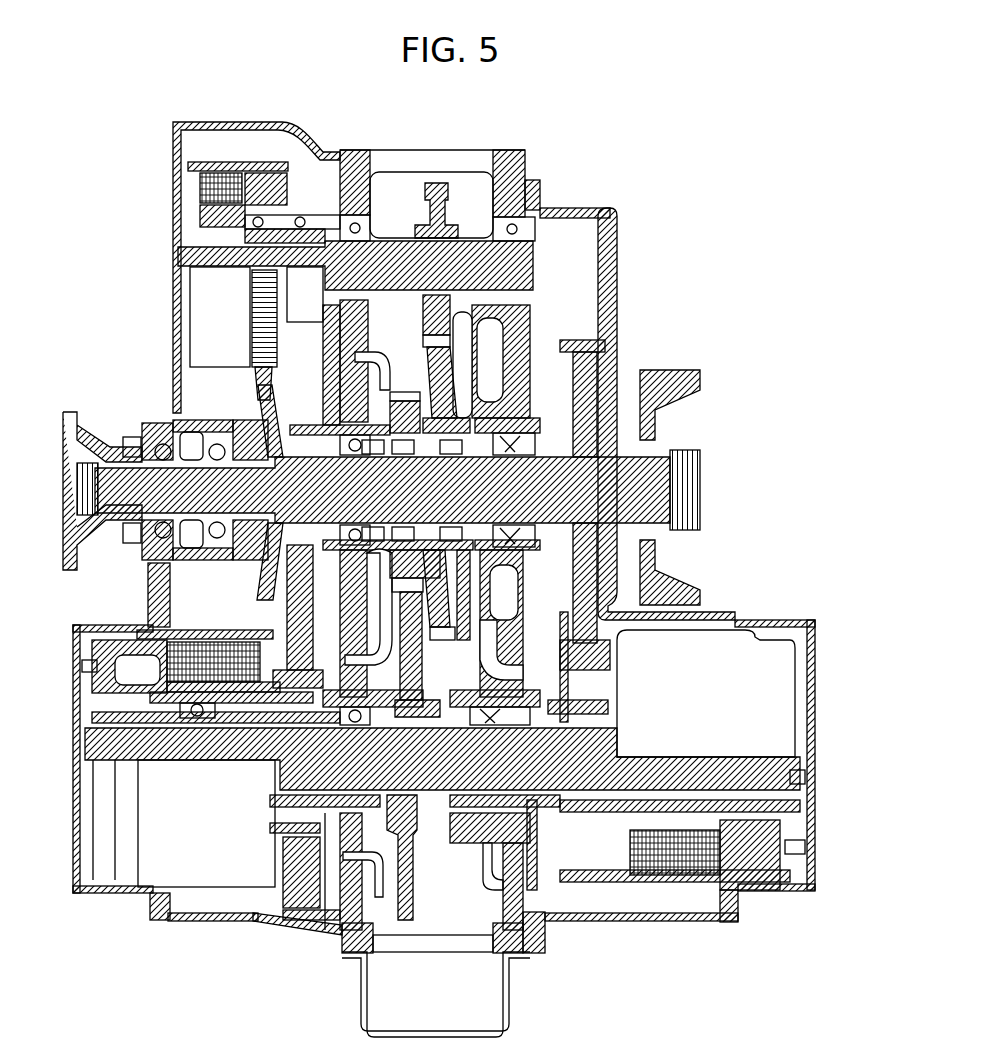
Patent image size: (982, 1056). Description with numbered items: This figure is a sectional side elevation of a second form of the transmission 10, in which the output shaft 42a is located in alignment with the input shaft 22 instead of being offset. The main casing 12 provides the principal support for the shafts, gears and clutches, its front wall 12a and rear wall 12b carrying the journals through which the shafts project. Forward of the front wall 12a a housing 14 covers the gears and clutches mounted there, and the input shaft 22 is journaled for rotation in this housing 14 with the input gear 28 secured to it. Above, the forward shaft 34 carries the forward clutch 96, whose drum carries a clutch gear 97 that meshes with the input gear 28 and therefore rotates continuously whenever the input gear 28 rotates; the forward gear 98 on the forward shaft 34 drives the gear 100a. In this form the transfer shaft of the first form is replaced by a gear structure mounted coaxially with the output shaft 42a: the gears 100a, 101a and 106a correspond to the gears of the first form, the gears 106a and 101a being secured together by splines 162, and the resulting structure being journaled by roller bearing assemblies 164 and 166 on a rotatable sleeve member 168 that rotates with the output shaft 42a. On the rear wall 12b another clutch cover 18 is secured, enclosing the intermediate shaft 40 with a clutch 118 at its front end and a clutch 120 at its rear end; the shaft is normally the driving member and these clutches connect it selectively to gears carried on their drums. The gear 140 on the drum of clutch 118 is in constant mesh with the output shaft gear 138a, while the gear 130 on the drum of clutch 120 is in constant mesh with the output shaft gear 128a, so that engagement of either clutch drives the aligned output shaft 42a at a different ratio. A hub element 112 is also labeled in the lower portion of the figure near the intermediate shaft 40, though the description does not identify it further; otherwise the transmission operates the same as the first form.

The transmission 10 is at (313, 107).
The forward clutch 96 is at (198, 156).
The clutch gear 97 is at (262, 150).
The main casing 12 is at (493, 143).
The front wall 12a is at (372, 176).
The rear wall 12b is at (527, 156).
The forward gear 98 is at (437, 186).
The forward shaft 34 is at (388, 241).
The output shaft gear 138a is at (268, 375).
The gear 100a is at (425, 345).
The gear 106a is at (402, 392).
The gear 101a is at (505, 340).
The splines 162 is at (478, 395).
The output shaft gear 128a is at (582, 392).
The housing 14 is at (175, 420).
The input gear 28 is at (258, 400).
The input shaft 22 is at (80, 488).
The rotatable sleeve member 168 is at (372, 454).
The roller bearing assembly 164 is at (402, 454).
The roller bearing assembly 166 is at (455, 454).
The output shaft 42a is at (650, 493).
The gear 140 is at (292, 618).
The clutch cover 18 is at (723, 612).
The gear 130 is at (603, 643).
The clutch 120 is at (692, 712).
The clutch 118 is at (197, 840).
The intermediate shaft 40 is at (276, 766).
The hub 112 is at (415, 869).